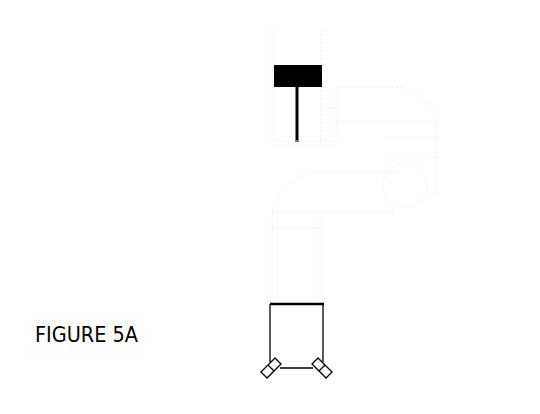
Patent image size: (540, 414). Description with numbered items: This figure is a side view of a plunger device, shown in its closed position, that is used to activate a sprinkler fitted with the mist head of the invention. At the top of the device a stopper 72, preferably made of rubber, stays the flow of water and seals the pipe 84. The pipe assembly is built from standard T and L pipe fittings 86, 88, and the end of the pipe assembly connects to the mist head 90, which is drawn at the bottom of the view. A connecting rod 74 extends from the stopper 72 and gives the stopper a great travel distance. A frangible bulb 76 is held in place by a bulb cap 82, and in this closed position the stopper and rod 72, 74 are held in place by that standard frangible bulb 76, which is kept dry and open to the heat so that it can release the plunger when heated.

The stopper 72 is at (275, 70).
The connecting rod 74 is at (297, 115).
The frangible bulb 76 is at (295, 138).
The bulb cap 82 is at (295, 141).
The pipe 84 is at (332, 45).
The T pipe fitting 86 is at (342, 100).
The L pipe fitting 88 is at (337, 210).
The mist head 90 is at (268, 318).